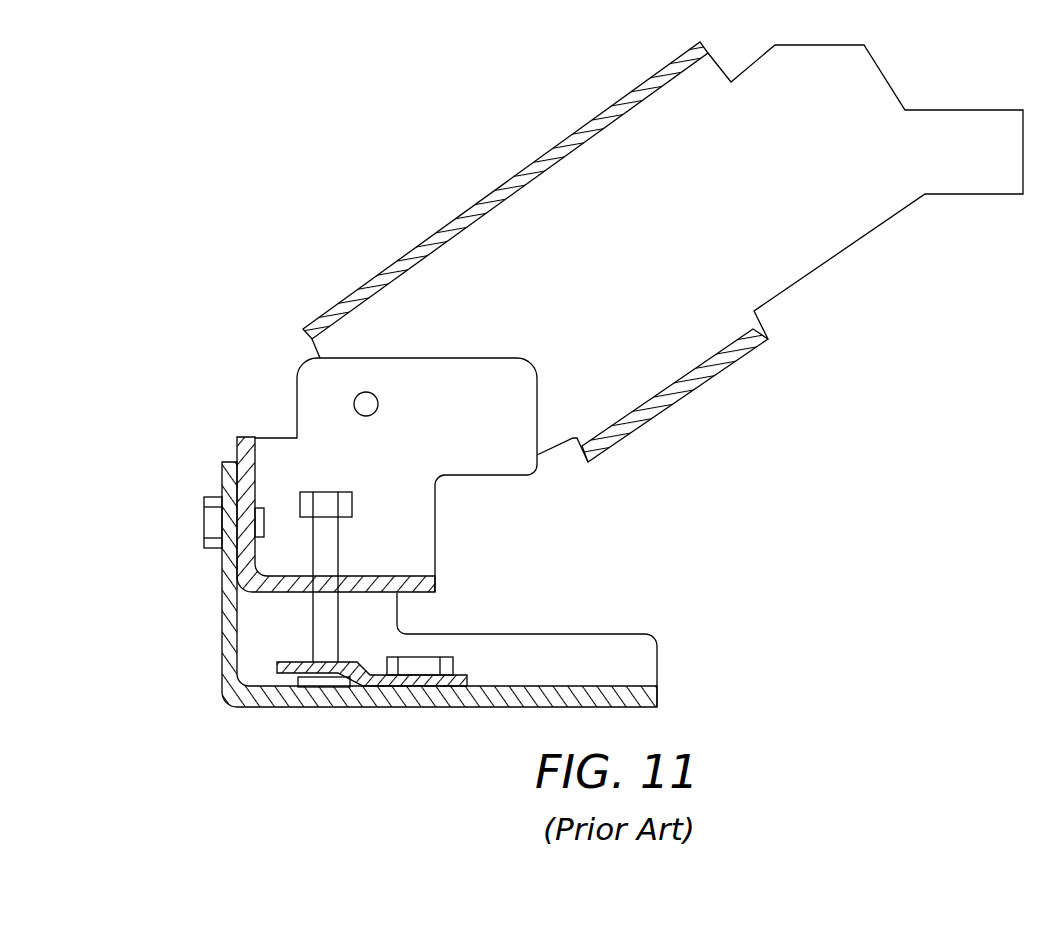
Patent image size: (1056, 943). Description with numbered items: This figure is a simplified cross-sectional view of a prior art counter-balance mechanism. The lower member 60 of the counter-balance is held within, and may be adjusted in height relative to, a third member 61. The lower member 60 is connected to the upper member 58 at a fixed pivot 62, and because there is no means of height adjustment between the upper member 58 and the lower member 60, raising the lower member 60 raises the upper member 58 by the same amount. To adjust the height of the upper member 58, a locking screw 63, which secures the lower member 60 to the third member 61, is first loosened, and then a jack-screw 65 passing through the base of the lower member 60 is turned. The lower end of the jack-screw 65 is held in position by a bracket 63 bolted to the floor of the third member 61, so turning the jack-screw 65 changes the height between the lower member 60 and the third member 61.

The upper member 58 is at (560, 143).
The lower member 60 is at (433, 540).
The third member 61 is at (222, 667).
The fixed pivot 62 is at (379, 401).
The locking screw 63 is at (205, 522).
The jack-screw 65 is at (338, 487).